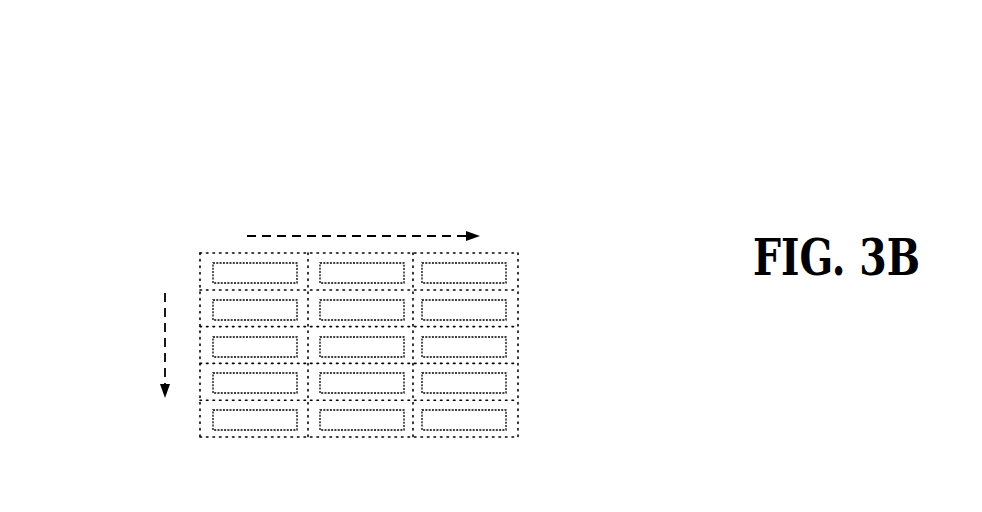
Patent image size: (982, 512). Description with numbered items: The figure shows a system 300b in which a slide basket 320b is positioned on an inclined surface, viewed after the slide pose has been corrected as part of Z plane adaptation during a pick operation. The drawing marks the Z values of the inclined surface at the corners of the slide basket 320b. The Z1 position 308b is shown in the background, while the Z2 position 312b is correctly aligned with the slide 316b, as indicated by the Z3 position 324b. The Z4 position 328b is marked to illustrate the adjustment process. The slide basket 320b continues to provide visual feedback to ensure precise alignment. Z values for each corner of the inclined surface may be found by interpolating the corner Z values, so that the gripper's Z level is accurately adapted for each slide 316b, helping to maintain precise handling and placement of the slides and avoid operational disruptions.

The system 300b is at (162, 78).
The Z1 position 308b is at (200, 265).
The Z2 position 312b is at (200, 440).
The slide 316b is at (518, 302).
The slide basket 320b is at (518, 382).
The Z3 position 324b is at (517, 437).
The Z4 position 328b is at (518, 253).